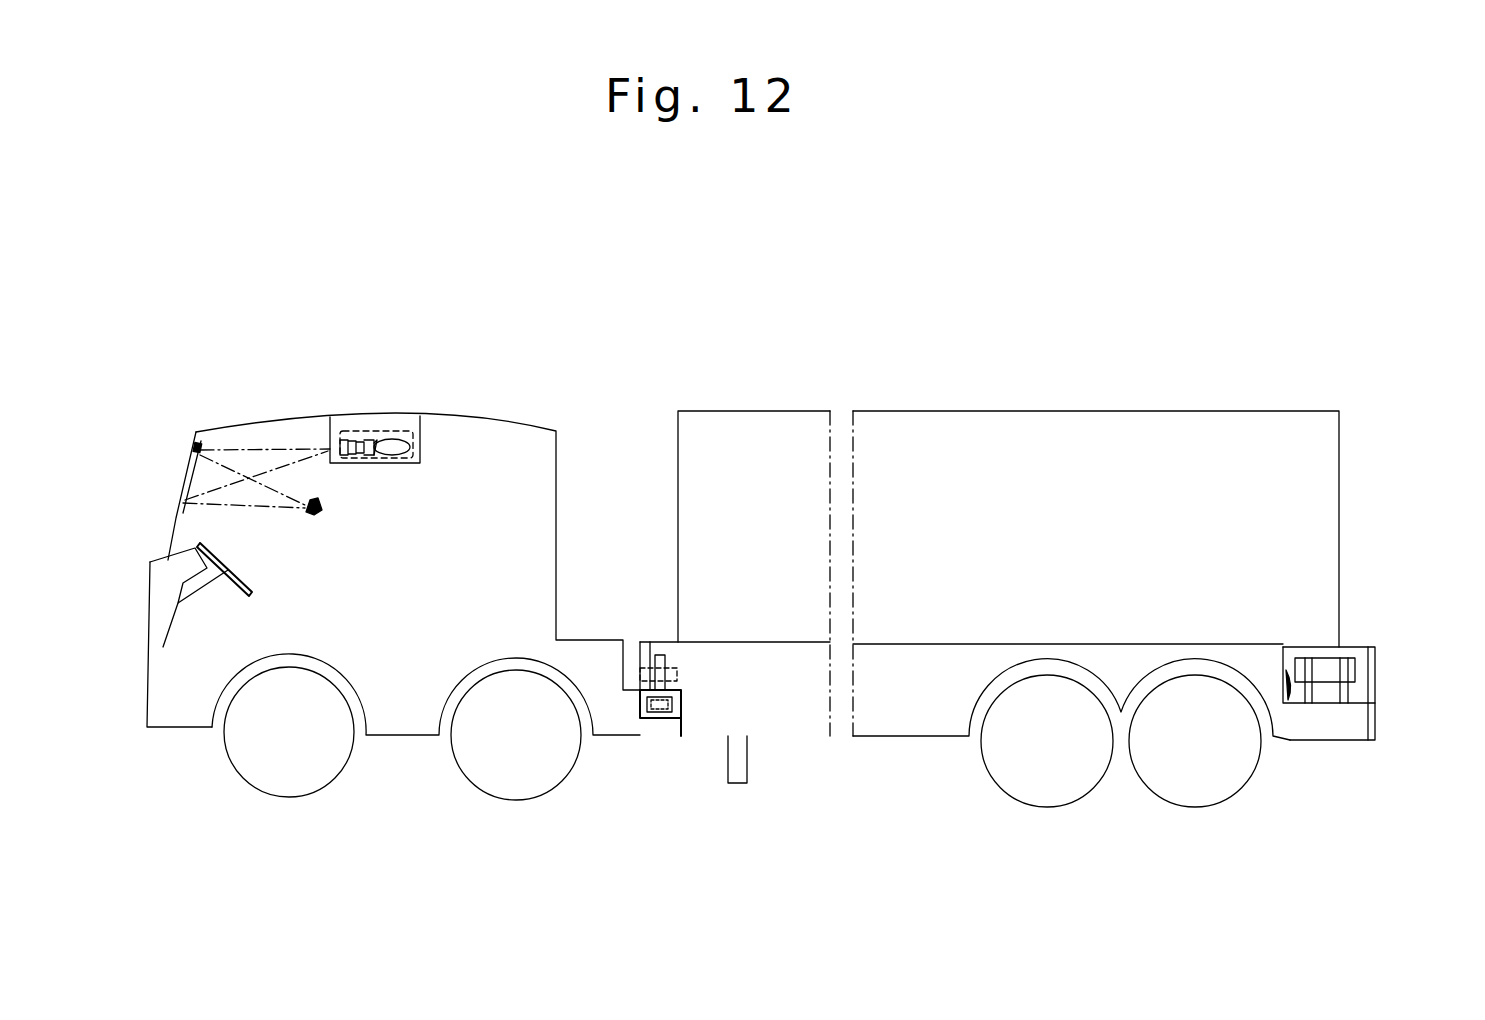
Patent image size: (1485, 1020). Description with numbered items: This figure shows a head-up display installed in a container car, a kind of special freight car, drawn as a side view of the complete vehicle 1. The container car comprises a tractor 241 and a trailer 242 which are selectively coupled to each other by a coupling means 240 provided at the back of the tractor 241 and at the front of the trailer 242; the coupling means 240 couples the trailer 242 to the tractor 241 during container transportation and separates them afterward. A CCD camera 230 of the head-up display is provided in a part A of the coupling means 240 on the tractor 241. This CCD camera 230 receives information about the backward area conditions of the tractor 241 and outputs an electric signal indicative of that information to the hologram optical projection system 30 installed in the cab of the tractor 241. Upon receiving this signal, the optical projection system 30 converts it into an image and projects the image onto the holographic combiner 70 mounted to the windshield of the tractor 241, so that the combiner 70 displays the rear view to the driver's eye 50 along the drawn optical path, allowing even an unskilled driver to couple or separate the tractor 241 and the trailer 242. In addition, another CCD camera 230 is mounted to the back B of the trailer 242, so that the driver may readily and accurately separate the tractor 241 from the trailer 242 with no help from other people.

The vehicle 1 is at (168, 540).
The hologram optical projection system 30 is at (362, 432).
The driver's eye 50 is at (320, 513).
The holographic combiner 70 is at (185, 447).
The CCD camera 230 is at (661, 713).
The coupling means 240 is at (640, 650).
The tractor 241 is at (498, 452).
The trailer 242 is at (1008, 455).
The part A of the coupling means A is at (649, 718).
The back B of the trailer B is at (1343, 706).